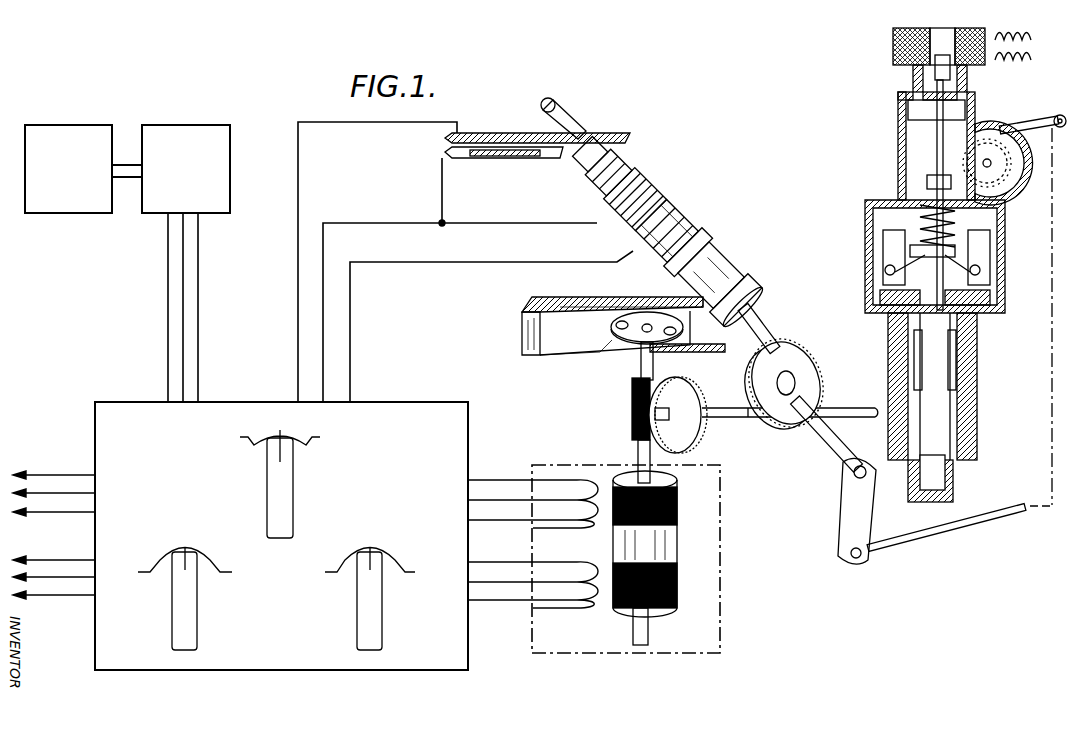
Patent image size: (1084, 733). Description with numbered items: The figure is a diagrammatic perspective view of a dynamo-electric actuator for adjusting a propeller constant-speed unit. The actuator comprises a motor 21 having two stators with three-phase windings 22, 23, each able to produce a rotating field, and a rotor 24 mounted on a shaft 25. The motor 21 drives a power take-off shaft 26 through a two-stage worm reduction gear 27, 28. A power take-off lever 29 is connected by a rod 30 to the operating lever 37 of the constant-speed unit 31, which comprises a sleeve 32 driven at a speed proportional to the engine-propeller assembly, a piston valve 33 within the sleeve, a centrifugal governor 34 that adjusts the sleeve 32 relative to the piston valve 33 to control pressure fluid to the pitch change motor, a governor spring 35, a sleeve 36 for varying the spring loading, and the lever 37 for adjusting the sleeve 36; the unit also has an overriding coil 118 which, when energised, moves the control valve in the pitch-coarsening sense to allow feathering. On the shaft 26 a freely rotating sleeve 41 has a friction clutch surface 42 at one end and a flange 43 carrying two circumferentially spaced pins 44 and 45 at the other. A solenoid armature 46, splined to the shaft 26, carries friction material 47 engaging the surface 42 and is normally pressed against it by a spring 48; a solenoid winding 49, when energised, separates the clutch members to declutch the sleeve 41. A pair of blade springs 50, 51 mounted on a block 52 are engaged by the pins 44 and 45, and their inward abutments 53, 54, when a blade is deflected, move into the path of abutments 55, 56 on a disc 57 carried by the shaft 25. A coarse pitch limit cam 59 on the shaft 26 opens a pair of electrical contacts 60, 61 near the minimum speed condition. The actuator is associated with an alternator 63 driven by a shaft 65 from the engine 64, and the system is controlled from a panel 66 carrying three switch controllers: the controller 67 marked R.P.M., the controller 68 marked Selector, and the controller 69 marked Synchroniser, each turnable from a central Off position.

The overriding coil 118 is at (893, 43).
The constant-speed unit 31 is at (907, 92).
The sleeve 36 is at (900, 135).
The lever 37 is at (1040, 128).
The governor spring 35 is at (900, 222).
The centrifugal governor 34 is at (960, 268).
The piston valve 33 is at (977, 315).
The sleeve 32 is at (950, 478).
The rod 30 is at (985, 510).
The power take-off lever 29 is at (840, 505).
The power take-off shaft 26 is at (835, 440).
The worm reduction gear 28 is at (800, 352).
The worm reduction gear 27 is at (703, 455).
The pin 45 is at (702, 360).
The flange 43 is at (762, 302).
The pin 44 is at (750, 290).
The sleeve 41 is at (713, 265).
The friction clutch surface 42 is at (704, 247).
The solenoid armature 46 is at (670, 228).
The solenoid winding 49 is at (646, 210).
The spring 48 is at (602, 182).
The friction material 47 is at (632, 248).
The coarse pitch limit cam 59 is at (601, 142).
The electrical contact 60 is at (563, 135).
The electrical contact 61 is at (545, 158).
The abutment 55 is at (600, 296).
The blade spring 50 is at (635, 316).
The abutment 53 is at (658, 312).
The block 52 is at (522, 336).
The disc 57 is at (585, 355).
The blade spring 51 is at (597, 358).
The abutment 54 is at (637, 352).
The abutment 56 is at (673, 352).
The motor 21 is at (714, 505).
The three-phase winding 22 is at (588, 608).
The three-phase winding 23 is at (588, 527).
The rotor 24 is at (678, 535).
The shaft 25 is at (650, 632).
The engine 64 is at (61, 140).
The shaft 65 is at (122, 160).
The alternator 63 is at (182, 132).
The panel 66 is at (231, 410).
The controller 67 is at (197, 603).
The controller 68 is at (382, 603).
The controller 69 is at (293, 480).